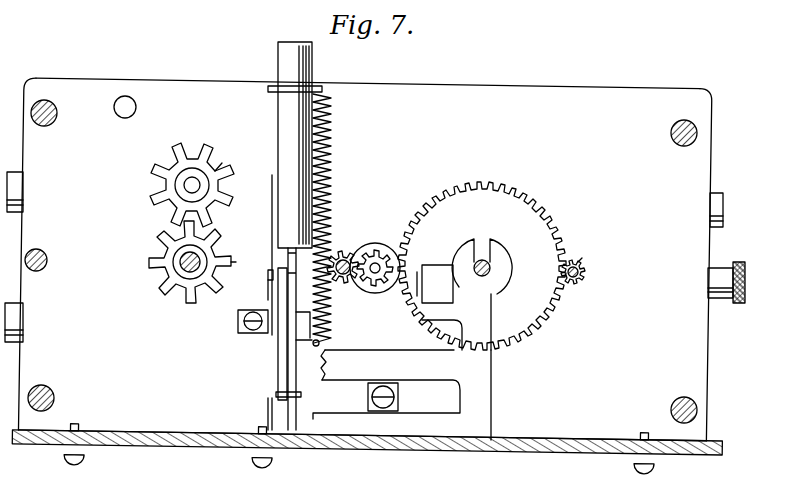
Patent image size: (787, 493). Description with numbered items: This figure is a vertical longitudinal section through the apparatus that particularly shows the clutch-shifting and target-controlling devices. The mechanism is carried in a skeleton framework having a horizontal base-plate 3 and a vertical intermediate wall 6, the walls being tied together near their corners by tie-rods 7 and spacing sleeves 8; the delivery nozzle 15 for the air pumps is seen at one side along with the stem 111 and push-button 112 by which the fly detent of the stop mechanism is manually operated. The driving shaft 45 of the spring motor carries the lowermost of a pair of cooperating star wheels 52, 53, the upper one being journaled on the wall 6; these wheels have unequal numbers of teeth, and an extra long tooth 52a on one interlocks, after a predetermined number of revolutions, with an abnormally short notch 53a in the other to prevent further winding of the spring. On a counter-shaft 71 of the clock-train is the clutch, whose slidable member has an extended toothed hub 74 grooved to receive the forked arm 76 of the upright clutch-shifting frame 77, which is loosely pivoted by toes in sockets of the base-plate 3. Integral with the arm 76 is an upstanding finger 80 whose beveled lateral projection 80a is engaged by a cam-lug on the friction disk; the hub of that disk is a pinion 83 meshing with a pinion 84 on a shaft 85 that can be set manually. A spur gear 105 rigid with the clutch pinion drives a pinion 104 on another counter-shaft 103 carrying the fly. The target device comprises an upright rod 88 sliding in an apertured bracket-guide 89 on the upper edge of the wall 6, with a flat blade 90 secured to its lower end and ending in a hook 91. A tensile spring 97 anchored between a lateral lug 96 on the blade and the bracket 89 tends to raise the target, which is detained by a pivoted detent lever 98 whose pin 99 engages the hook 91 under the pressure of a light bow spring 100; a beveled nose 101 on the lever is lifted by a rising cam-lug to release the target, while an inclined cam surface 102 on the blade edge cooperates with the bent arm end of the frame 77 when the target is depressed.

The base-plate 3 is at (404, 450).
The intermediate wall 6 is at (494, 100).
The tie-rod 7 is at (679, 120).
The spacing sleeve 8 is at (698, 133).
The delivery nozzle 15 is at (716, 205).
The driving shaft 45 is at (180, 262).
The star wheel 52 is at (180, 300).
The extra long tooth 52a is at (228, 268).
The star wheel 53 is at (206, 147).
The short notch 53a is at (222, 167).
The counter-shaft 71 is at (495, 280).
The toothed hub 74 is at (483, 260).
The forked arm 76 is at (492, 312).
The clutch-shifting frame 77 is at (492, 388).
The upstanding finger 80 is at (426, 296).
The beveled lateral projection 80a is at (420, 272).
The pinion 83 is at (344, 250).
The pinion 84 is at (377, 262).
The shaft 85 is at (373, 294).
The upright rod 88 is at (281, 58).
The bracket-guide 89 is at (323, 87).
The strip or blade 90 is at (300, 305).
The hook 91 is at (286, 400).
The lateral lug 96 is at (312, 365).
The tensile spring 97 is at (333, 178).
The detent lever 98 is at (280, 350).
The pin 99 is at (302, 395).
The bow spring 100 is at (270, 200).
The nose 101 is at (272, 280).
The cam surface 102 is at (287, 262).
The counter-shaft 103 is at (586, 272).
The pinion 104 is at (580, 262).
The spur gear 105 is at (540, 212).
The horizontal stem 111 is at (712, 298).
The push-button 112 is at (742, 304).